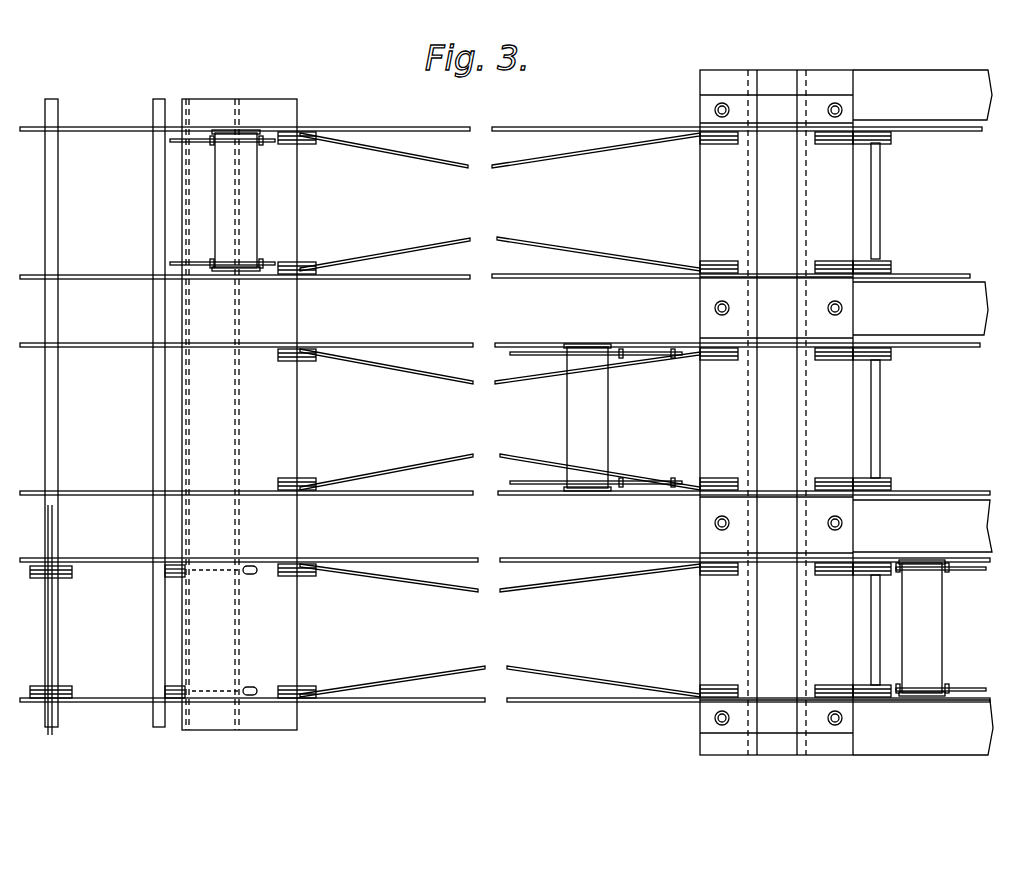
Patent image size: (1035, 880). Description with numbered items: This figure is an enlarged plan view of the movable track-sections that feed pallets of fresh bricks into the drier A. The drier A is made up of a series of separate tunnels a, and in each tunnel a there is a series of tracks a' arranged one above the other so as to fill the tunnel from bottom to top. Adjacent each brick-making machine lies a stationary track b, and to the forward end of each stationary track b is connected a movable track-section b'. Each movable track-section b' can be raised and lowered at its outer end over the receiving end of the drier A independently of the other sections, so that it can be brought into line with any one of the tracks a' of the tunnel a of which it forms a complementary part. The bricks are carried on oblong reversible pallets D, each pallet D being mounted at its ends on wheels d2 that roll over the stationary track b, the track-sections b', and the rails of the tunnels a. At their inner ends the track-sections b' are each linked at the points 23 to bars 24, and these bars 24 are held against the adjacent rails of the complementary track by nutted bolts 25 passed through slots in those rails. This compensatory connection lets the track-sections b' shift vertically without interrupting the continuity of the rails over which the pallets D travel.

The pallet D is at (578, 413).
The tunnel a is at (922, 414).
The track a' is at (930, 412).
The drier A is at (830, 412).
The stationary track b is at (72, 417).
The movable track-section b' is at (505, 414).
The wheels d2 is at (578, 346).
The linking points 23 is at (302, 703).
The bars 24 is at (260, 689).
The nutted bolts 25 is at (196, 700).